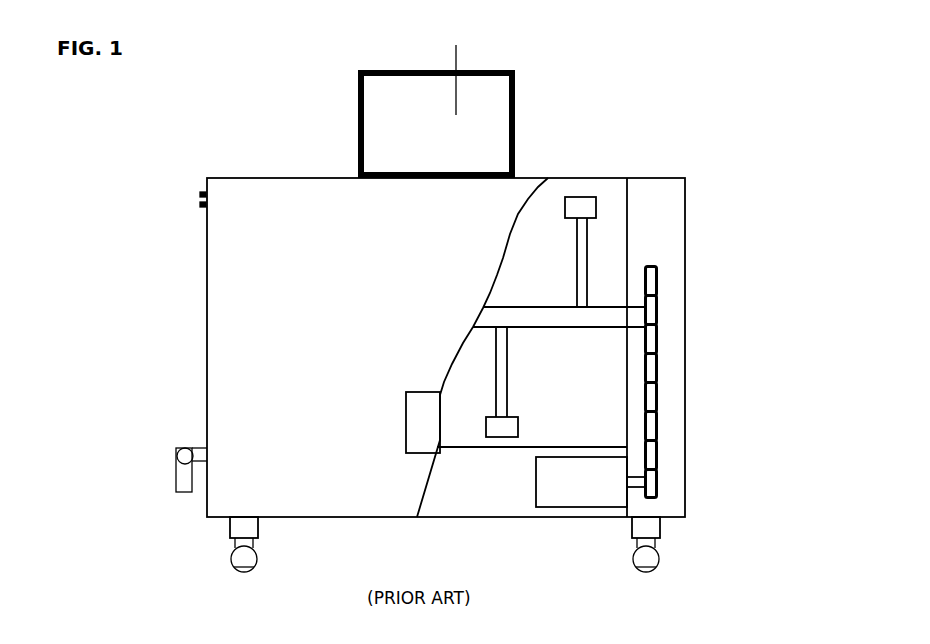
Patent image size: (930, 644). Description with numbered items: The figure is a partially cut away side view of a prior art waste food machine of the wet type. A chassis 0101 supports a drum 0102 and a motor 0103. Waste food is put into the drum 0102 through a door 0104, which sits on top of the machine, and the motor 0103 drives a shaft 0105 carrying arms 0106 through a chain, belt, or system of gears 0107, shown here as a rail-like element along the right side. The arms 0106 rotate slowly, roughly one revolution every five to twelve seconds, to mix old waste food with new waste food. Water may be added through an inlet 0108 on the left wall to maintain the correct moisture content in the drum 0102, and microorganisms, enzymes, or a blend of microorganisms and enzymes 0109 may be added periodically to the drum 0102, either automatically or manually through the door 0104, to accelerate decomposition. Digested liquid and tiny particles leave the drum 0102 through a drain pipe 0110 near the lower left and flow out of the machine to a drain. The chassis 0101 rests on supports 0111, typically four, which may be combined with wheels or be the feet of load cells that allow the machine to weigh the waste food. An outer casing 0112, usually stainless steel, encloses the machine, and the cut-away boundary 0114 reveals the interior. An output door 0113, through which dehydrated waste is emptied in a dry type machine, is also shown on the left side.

The chassis 0101 is at (690, 507).
The drum 0102 is at (606, 371).
The motor 0103 is at (604, 470).
The door 0104 is at (385, 125).
The shaft 0105 is at (613, 318).
The arms 0106 is at (605, 253).
The chain, belt, or system of gears 0107 is at (676, 417).
The inlet 0108 is at (180, 200).
The microorganisms, enzymes, or a blend of microorganisms and enzymes 0109 is at (456, 115).
The drain pipe 0110 is at (160, 472).
The supports 0111 is at (212, 558).
The outer casing 0112 is at (262, 276).
The output door 0113 is at (387, 419).
The curved partition 0114 is at (535, 171).